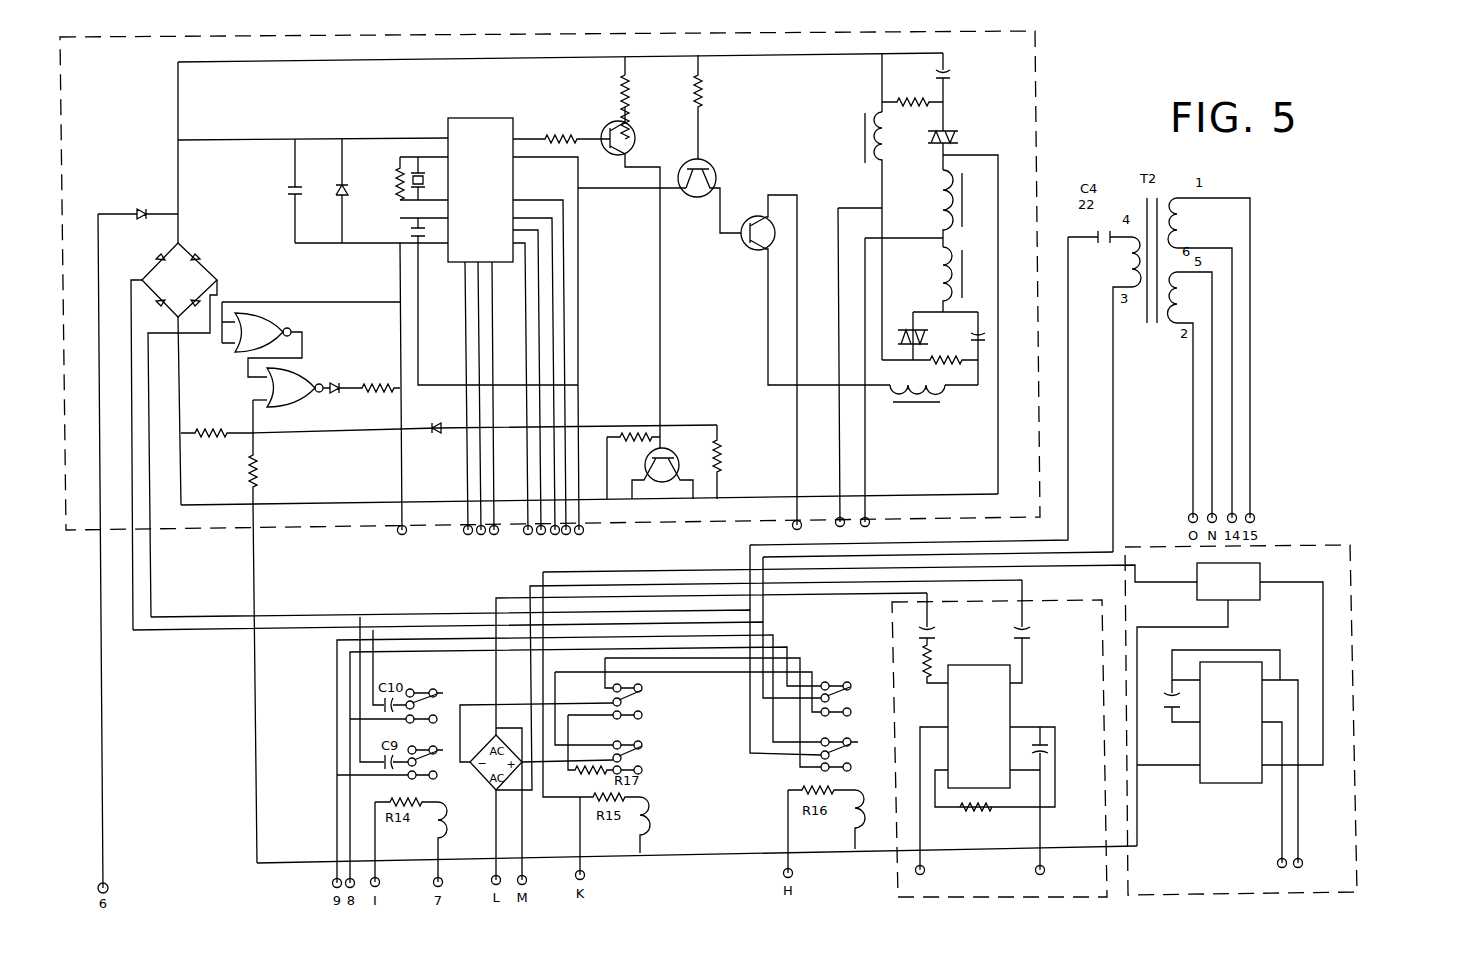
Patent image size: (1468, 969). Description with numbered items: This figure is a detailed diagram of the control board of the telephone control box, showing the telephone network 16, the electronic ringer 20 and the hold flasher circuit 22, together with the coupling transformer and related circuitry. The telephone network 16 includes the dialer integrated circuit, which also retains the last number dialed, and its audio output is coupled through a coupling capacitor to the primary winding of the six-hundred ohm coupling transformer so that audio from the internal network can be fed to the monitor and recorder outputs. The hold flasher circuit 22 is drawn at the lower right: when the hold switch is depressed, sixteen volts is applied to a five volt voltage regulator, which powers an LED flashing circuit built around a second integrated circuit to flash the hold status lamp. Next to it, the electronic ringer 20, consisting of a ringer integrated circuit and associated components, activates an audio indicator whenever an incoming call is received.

The telephone network 16 is at (550, 459).
The electronic ringer 20 is at (999, 738).
The hold flasher circuit 22 is at (1352, 733).